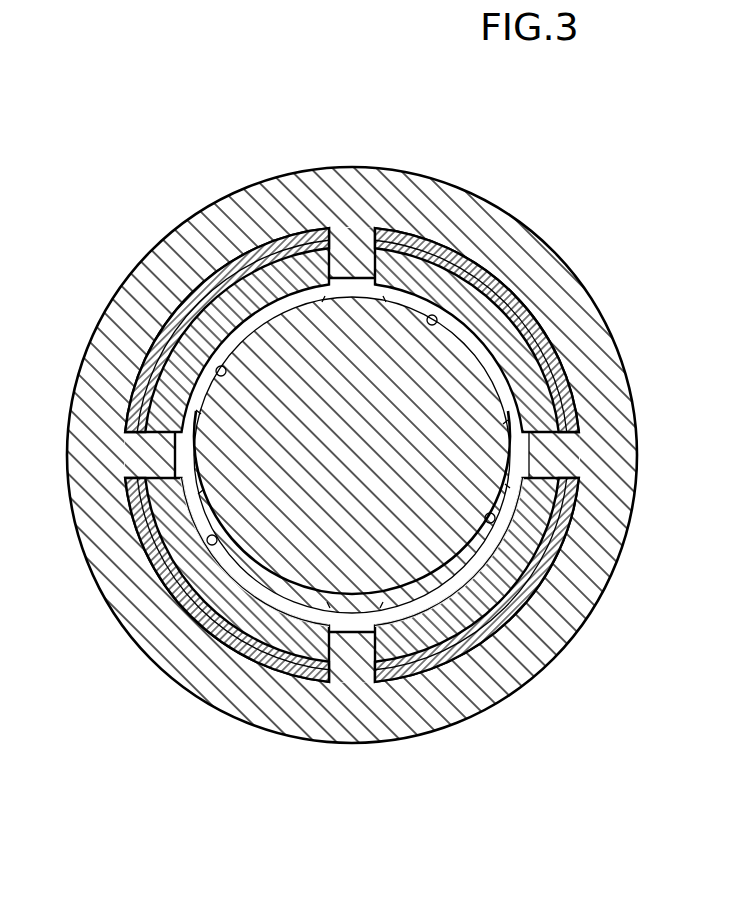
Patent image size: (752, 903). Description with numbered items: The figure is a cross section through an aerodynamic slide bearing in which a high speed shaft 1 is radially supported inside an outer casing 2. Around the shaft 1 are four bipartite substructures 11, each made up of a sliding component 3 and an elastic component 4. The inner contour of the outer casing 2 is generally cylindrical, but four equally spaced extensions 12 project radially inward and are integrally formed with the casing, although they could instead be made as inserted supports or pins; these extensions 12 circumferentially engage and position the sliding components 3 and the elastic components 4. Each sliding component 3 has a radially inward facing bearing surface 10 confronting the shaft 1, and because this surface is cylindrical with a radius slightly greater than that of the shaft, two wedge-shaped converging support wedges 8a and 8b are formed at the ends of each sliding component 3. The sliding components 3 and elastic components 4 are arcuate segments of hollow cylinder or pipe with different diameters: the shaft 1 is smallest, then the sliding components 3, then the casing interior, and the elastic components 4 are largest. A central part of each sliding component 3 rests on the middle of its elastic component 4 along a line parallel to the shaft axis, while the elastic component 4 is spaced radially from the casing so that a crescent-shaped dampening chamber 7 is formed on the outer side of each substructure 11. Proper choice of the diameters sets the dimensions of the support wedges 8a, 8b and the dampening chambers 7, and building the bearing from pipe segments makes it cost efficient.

The shaft 1 is at (363, 460).
The outer casing 2 is at (430, 720).
The sliding component 3 is at (238, 290).
The elastic component 4 is at (344, 455).
The dampening chamber 7 is at (344, 454).
The support wedge 8a is at (384, 298).
The support wedge 8b is at (326, 298).
The bearing surface 10 is at (217, 367).
The substructure 11 is at (172, 387).
The extension 12 is at (350, 279).